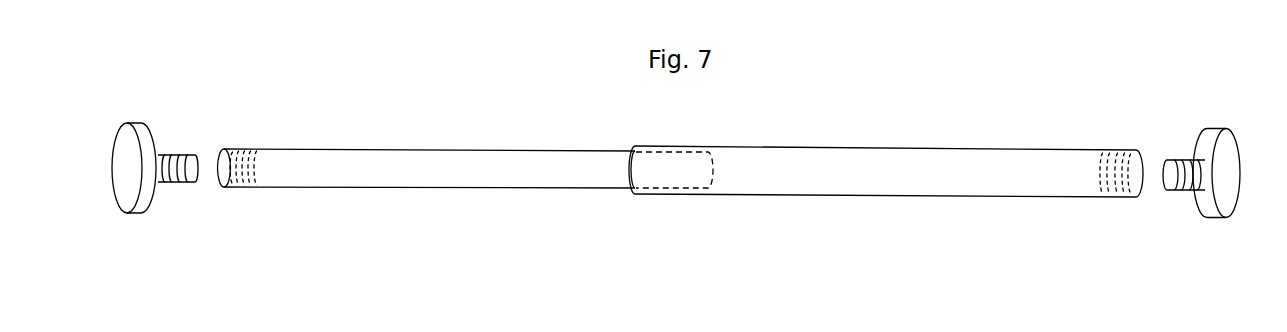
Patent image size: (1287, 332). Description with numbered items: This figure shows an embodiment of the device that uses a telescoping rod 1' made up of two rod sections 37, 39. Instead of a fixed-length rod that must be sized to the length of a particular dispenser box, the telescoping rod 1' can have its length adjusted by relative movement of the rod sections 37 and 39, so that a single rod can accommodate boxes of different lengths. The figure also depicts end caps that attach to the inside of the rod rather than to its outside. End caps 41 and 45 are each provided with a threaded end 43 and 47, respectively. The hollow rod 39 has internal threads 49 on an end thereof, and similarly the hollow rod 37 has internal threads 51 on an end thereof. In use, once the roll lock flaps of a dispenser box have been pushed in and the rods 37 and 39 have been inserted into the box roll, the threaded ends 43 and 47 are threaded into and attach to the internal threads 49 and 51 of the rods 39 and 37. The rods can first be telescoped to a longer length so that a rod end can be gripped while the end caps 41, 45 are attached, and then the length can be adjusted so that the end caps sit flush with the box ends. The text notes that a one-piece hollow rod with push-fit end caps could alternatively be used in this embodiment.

The telescoping rod 1' is at (967, 111).
The rod section 37 is at (421, 189).
The rod section 39 is at (900, 195).
The end cap 41 is at (1222, 129).
The threaded end 43 is at (1174, 160).
The end cap 45 is at (133, 123).
The threaded end 47 is at (186, 155).
The internal threads 49 is at (1119, 150).
The internal threads 51 is at (240, 149).